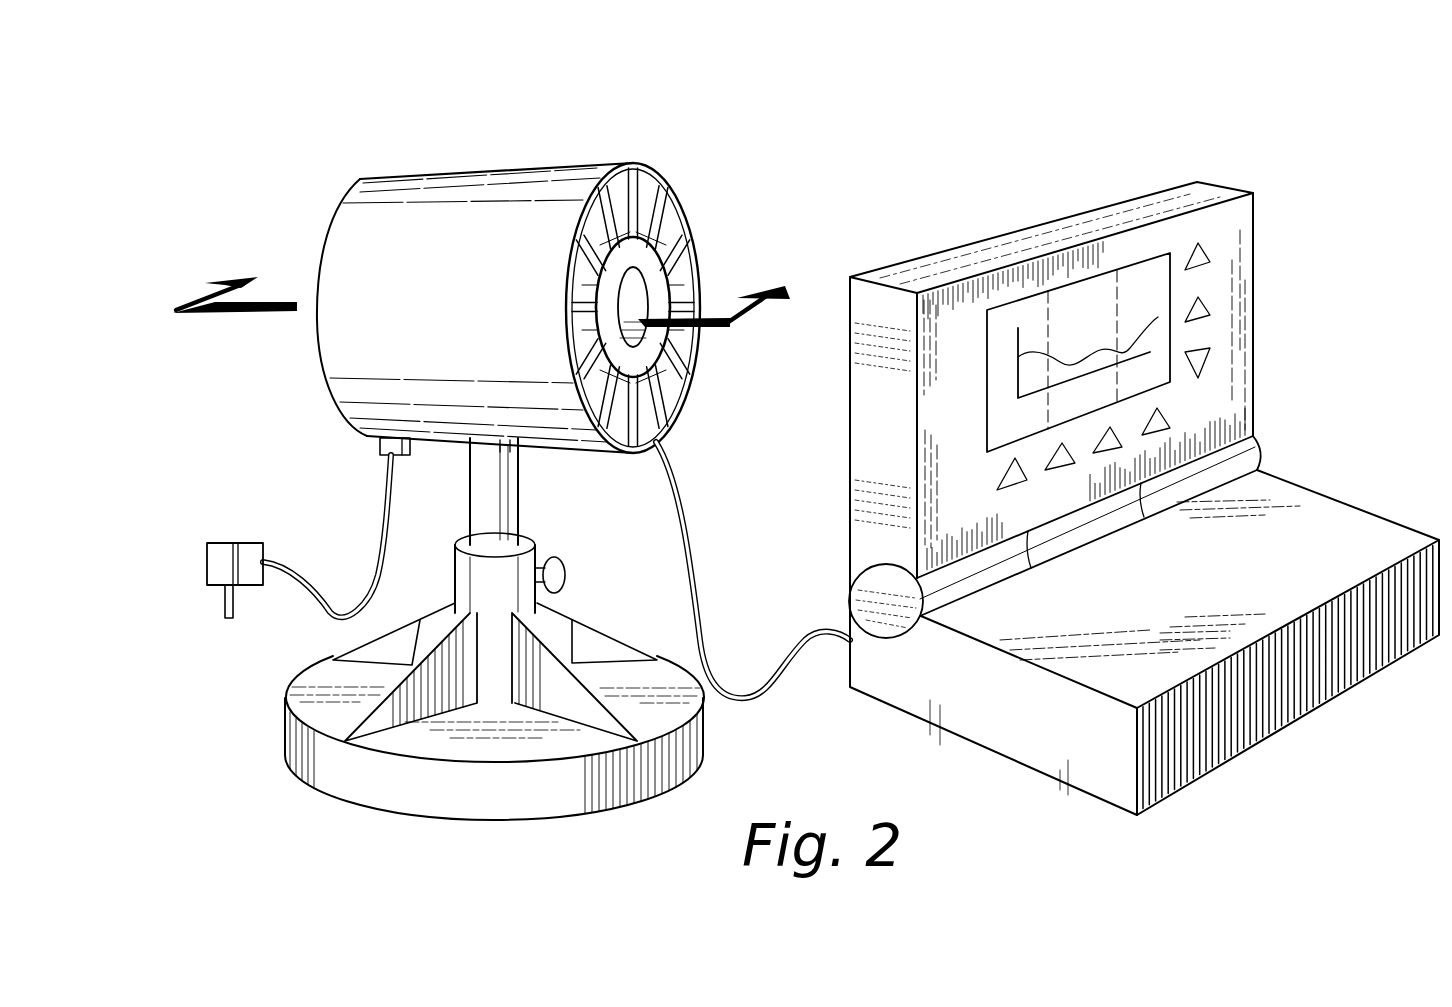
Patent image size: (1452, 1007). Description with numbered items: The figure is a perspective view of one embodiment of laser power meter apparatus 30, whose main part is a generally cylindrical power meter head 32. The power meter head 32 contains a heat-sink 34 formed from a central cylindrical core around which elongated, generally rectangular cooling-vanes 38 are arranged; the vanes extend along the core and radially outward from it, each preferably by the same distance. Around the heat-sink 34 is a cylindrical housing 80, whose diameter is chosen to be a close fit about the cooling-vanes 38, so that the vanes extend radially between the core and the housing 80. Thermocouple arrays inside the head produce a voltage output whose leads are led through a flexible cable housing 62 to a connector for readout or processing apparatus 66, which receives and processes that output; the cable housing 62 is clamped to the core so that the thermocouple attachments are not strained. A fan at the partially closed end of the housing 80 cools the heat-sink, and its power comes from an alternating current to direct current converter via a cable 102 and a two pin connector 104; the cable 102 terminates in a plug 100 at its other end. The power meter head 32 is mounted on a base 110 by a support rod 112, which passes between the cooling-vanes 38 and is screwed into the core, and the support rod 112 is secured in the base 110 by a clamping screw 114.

The laser power meter apparatus 30 is at (900, 152).
The power meter head 32 is at (734, 146).
The heat-sink 34 is at (720, 260).
The cooling-vanes 38 is at (679, 175).
The flexible cable housing 62 is at (735, 700).
The readout or processing apparatus 66 is at (1314, 288).
The cylindrical housing 80 is at (440, 203).
The power cord plug prong 100 is at (207, 560).
The cable 102 is at (300, 580).
The two pin connector 104 is at (380, 450).
The base 110 is at (487, 803).
The support rod 112 is at (515, 500).
The clamping screw 114 is at (565, 568).